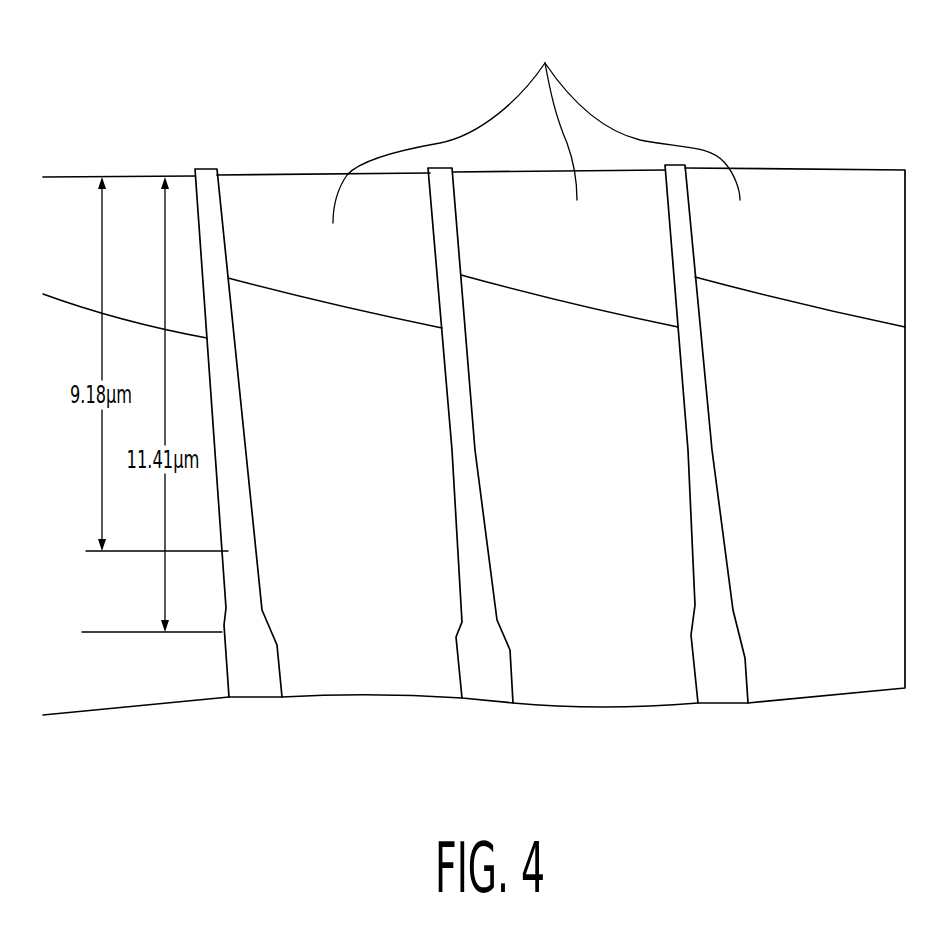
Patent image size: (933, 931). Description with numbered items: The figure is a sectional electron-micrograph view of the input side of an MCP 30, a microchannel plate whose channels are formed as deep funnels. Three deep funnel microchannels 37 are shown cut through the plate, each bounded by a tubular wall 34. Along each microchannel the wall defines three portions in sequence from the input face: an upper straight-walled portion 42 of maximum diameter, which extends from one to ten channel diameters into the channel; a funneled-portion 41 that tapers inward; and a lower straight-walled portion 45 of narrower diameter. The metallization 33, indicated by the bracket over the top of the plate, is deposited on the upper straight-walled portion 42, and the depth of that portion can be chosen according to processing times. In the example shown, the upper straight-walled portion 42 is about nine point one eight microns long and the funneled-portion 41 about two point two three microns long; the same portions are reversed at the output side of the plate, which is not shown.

The MCP 30 is at (293, 78).
The metallization 33 is at (536, 124).
The tubular wall 34 is at (255, 682).
The deep funnel microchannel 37 is at (366, 448).
The funneled-portion 41 is at (460, 600).
The upper straight-walled portion 42 is at (447, 371).
The lower straight-walled portion 45 is at (460, 685).